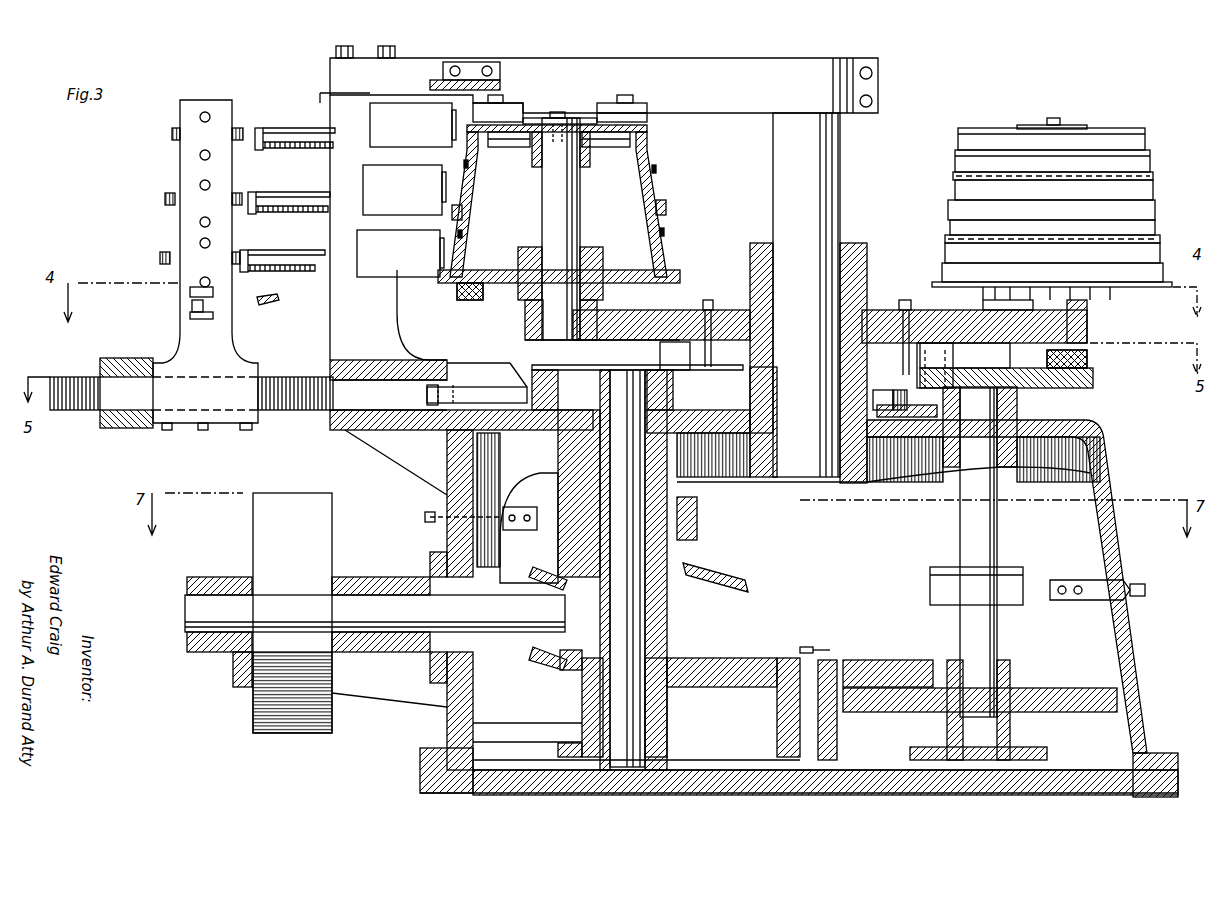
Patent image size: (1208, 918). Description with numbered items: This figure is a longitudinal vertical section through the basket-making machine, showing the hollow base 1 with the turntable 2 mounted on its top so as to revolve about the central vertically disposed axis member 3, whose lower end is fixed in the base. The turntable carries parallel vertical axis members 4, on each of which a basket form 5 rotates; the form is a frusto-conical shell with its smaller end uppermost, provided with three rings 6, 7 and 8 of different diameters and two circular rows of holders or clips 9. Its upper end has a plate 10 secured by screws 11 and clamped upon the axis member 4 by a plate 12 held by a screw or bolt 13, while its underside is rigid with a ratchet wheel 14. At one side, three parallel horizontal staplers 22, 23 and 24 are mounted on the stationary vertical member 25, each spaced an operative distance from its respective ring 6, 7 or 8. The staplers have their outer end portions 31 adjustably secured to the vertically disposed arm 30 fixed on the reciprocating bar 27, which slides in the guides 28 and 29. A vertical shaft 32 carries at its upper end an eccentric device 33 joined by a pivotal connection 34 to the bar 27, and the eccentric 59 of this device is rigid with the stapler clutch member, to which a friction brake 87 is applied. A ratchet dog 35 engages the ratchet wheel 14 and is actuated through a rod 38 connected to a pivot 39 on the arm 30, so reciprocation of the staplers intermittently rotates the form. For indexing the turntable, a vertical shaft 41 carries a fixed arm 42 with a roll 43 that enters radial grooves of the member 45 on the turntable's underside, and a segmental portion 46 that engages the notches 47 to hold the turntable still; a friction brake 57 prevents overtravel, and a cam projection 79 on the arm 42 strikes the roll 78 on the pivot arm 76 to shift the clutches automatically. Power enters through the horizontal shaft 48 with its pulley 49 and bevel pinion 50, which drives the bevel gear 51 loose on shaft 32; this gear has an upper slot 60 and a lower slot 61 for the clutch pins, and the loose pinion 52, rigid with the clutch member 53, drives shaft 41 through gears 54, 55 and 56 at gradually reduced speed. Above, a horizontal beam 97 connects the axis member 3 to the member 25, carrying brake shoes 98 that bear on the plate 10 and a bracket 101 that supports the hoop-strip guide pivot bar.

The hollow base 1 is at (1108, 460).
The turntable 2 is at (722, 312).
The axis member 3 is at (820, 160).
The axis member 4 is at (580, 190).
The basket form 5 is at (665, 240).
The ring 6 is at (478, 145).
The ring 7 is at (465, 210).
The ring 8 is at (456, 268).
The holders or clips 9 is at (660, 172).
The plate 10 is at (603, 118).
The screws 11 is at (650, 132).
The plate 12 is at (578, 118).
The screw or bolt 13 is at (555, 112).
The ratchet wheel 14 is at (1035, 305).
The stapler 22 is at (388, 120).
The stapler 23 is at (404, 190).
The stapler 24 is at (400, 253).
The vertically disposed member 25 is at (355, 330).
The reciprocating bar 27 is at (292, 377).
The guide 28 is at (126, 428).
The guide 29 is at (370, 432).
The vertically disposed arm 30 is at (222, 110).
The outer end portions 31 is at (248, 128).
The vertical shaft 32 is at (645, 515).
The eccentric device 33 is at (673, 395).
The pivotal connection 34 is at (445, 387).
The ratchet dog 35 is at (457, 292).
The rod 38 is at (262, 296).
The pivot 39 is at (190, 312).
The vertical shaft 41 is at (992, 525).
The arm 42 is at (1030, 388).
The roll 43 is at (1087, 360).
The member 45 is at (712, 367).
The segmental portion 46 is at (945, 343).
The notches 47 is at (660, 350).
The horizontal shaft 48 is at (398, 595).
The pulley 49 is at (283, 503).
The bevel pinion 50 is at (545, 665).
The bevel gear 51 is at (725, 575).
The loose pinion 52 is at (580, 680).
The clutch member 53 is at (672, 628).
The gear 54 is at (740, 658).
The gear 55 is at (850, 665).
The gear 56 is at (697, 505).
The friction brake 57 is at (1010, 600).
The eccentric 59 is at (555, 370).
The upper slot 60 is at (560, 540).
The lower slot 61 is at (690, 592).
The pivot arm 76 is at (880, 395).
The roll 78 is at (905, 408).
The cam projection 79 is at (960, 405).
The friction brake 87 is at (535, 512).
The horizontal beam 97 is at (414, 68).
The brake shoes 98 is at (505, 103).
The bracket 101 is at (467, 83).